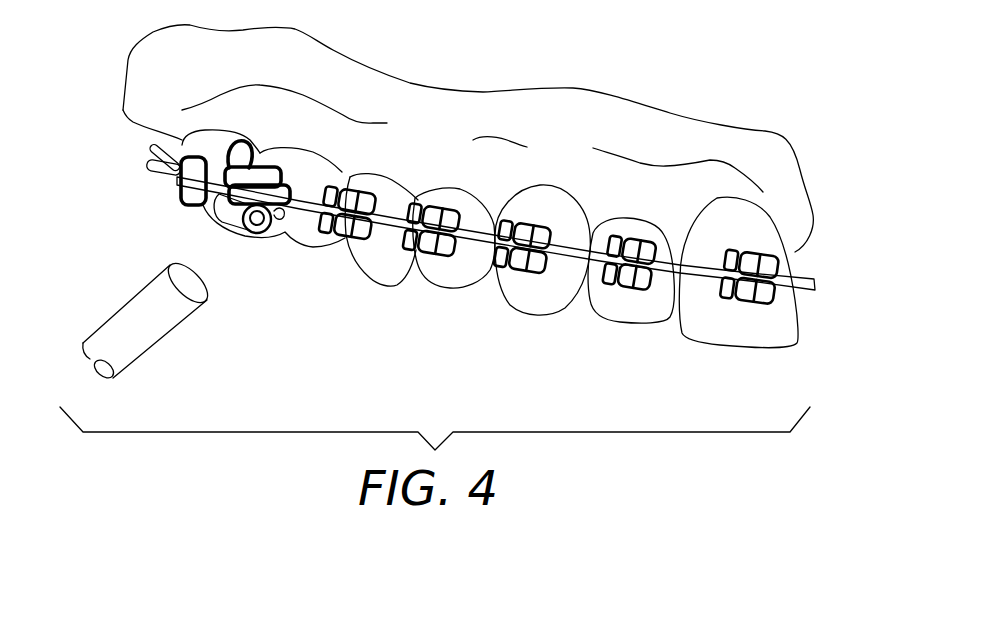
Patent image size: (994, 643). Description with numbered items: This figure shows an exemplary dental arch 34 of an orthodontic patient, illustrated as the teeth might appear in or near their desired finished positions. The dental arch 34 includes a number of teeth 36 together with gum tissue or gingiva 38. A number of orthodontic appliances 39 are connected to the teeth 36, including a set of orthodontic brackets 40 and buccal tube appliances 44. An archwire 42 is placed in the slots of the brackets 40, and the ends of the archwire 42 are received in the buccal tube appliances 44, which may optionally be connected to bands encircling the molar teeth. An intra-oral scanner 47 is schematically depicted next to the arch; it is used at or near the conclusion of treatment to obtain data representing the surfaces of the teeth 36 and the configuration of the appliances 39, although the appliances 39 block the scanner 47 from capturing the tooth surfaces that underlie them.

The dental arch 34 is at (429, 205).
The teeth 36 is at (372, 257).
The gingiva 38 is at (443, 113).
The orthodontic appliances 39 is at (113, 165).
The orthodontic brackets 40 is at (553, 269).
The archwire 42 is at (708, 275).
The buccal tube appliances 44 is at (153, 182).
The intra-oral scanner 47 is at (143, 333).